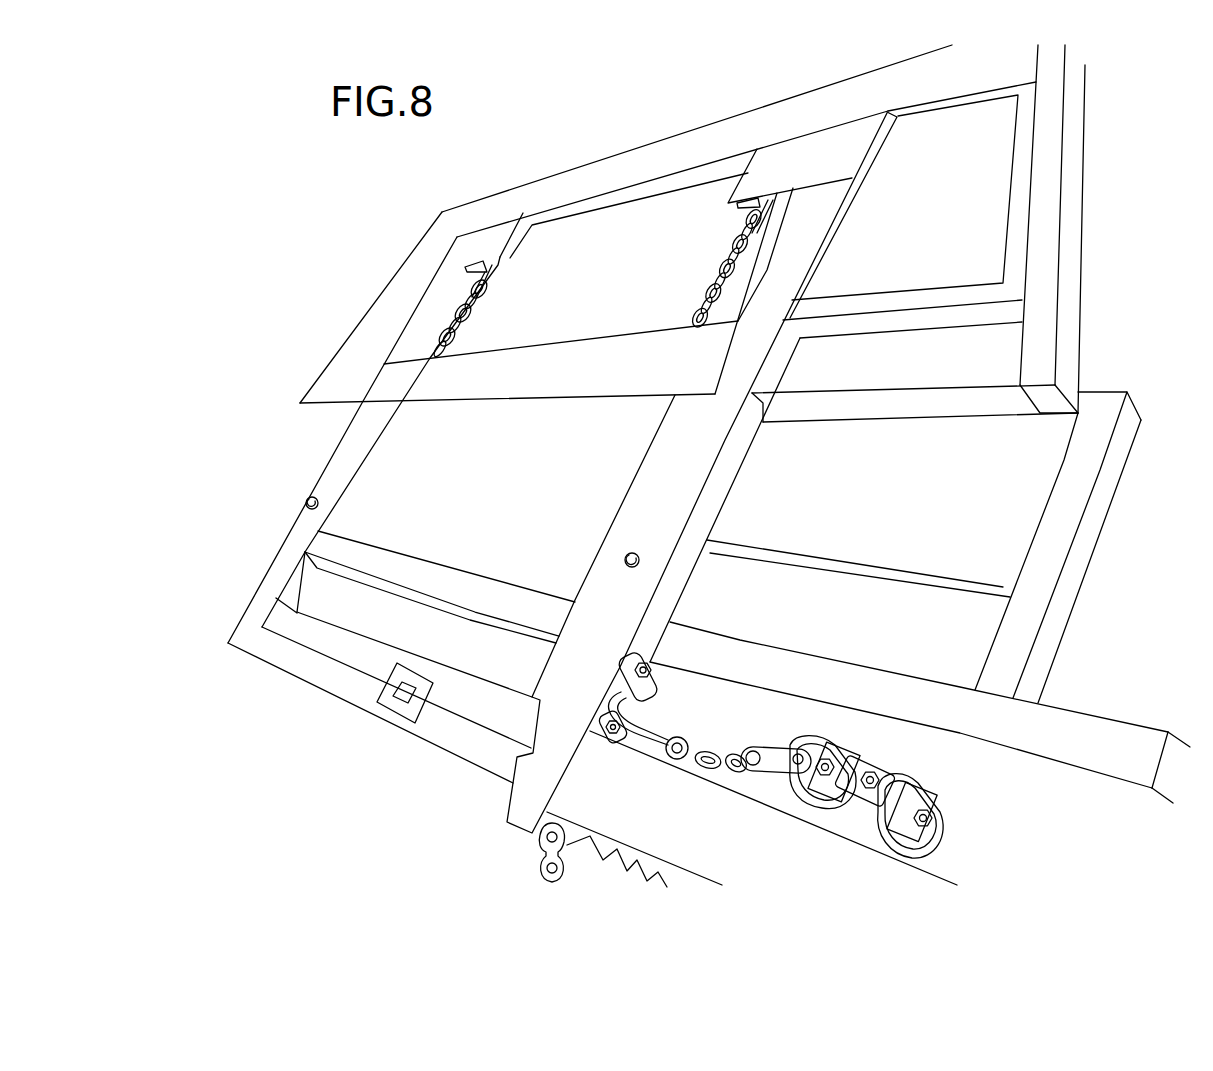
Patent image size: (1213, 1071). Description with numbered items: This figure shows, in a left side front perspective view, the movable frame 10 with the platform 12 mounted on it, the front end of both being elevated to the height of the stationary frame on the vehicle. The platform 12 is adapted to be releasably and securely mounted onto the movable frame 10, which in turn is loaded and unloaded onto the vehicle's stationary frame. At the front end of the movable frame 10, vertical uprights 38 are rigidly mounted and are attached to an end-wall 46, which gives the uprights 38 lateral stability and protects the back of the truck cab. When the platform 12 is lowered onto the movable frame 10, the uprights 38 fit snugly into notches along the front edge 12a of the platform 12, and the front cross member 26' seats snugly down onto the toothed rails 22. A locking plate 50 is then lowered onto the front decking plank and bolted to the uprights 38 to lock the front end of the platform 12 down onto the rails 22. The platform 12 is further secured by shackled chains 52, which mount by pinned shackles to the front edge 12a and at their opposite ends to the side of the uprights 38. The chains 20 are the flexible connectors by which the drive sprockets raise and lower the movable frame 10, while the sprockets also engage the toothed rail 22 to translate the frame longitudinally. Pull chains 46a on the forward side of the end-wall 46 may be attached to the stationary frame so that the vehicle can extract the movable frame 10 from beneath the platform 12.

The movable frame 10 is at (317, 638).
The platform 12 is at (1102, 823).
The front edge 12a is at (834, 670).
The chains 20 is at (545, 842).
The toothed rail 22 is at (664, 820).
The front cross member 26' is at (958, 816).
The vertical uprights 38 is at (335, 457).
The end-wall 46 is at (1075, 167).
The pull chains 46a is at (477, 315).
The locking plate 50 is at (1095, 548).
The shackled chains 52 is at (731, 745).